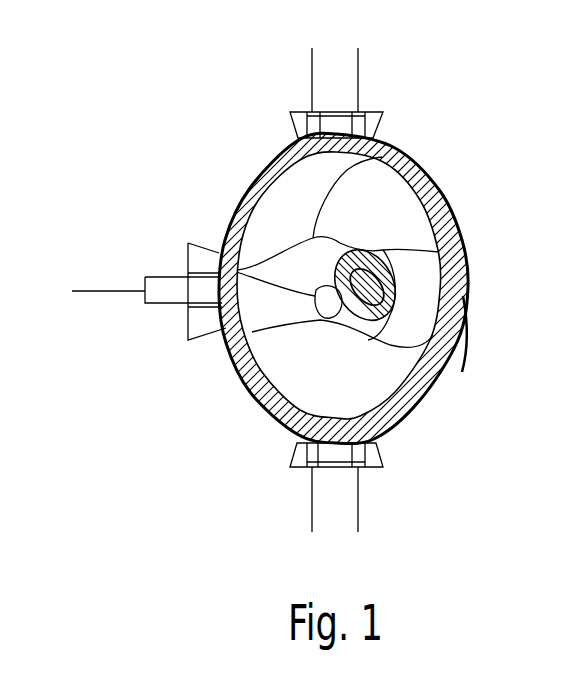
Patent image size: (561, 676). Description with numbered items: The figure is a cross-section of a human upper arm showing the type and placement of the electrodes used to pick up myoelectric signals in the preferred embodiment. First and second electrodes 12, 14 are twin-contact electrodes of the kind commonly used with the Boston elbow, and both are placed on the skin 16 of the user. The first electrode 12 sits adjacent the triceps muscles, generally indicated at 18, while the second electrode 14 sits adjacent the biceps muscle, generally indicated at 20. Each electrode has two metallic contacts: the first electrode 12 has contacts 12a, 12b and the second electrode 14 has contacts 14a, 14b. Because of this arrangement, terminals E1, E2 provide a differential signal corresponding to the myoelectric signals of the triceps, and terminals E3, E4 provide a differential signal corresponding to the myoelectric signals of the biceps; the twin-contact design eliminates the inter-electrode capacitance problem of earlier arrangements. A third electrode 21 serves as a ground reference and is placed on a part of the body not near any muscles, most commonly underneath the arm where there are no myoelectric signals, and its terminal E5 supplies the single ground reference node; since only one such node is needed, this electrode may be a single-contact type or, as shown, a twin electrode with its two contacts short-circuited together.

The first electrode 12 is at (335, 111).
The metallic contact 12a is at (297, 128).
The metallic contact 12b is at (375, 113).
The second electrode 14 is at (338, 455).
The metallic contact 14a is at (297, 447).
The metallic contact 14b is at (381, 457).
The skin 16 is at (461, 214).
The triceps muscles 18 is at (321, 193).
The biceps muscle 20 is at (373, 385).
The side electrode 21 is at (200, 246).
The terminal E1 is at (312, 64).
The terminal E2 is at (358, 64).
The terminal E3 is at (312, 515).
The terminal E4 is at (358, 515).
The electrode terminal E5 is at (91, 292).